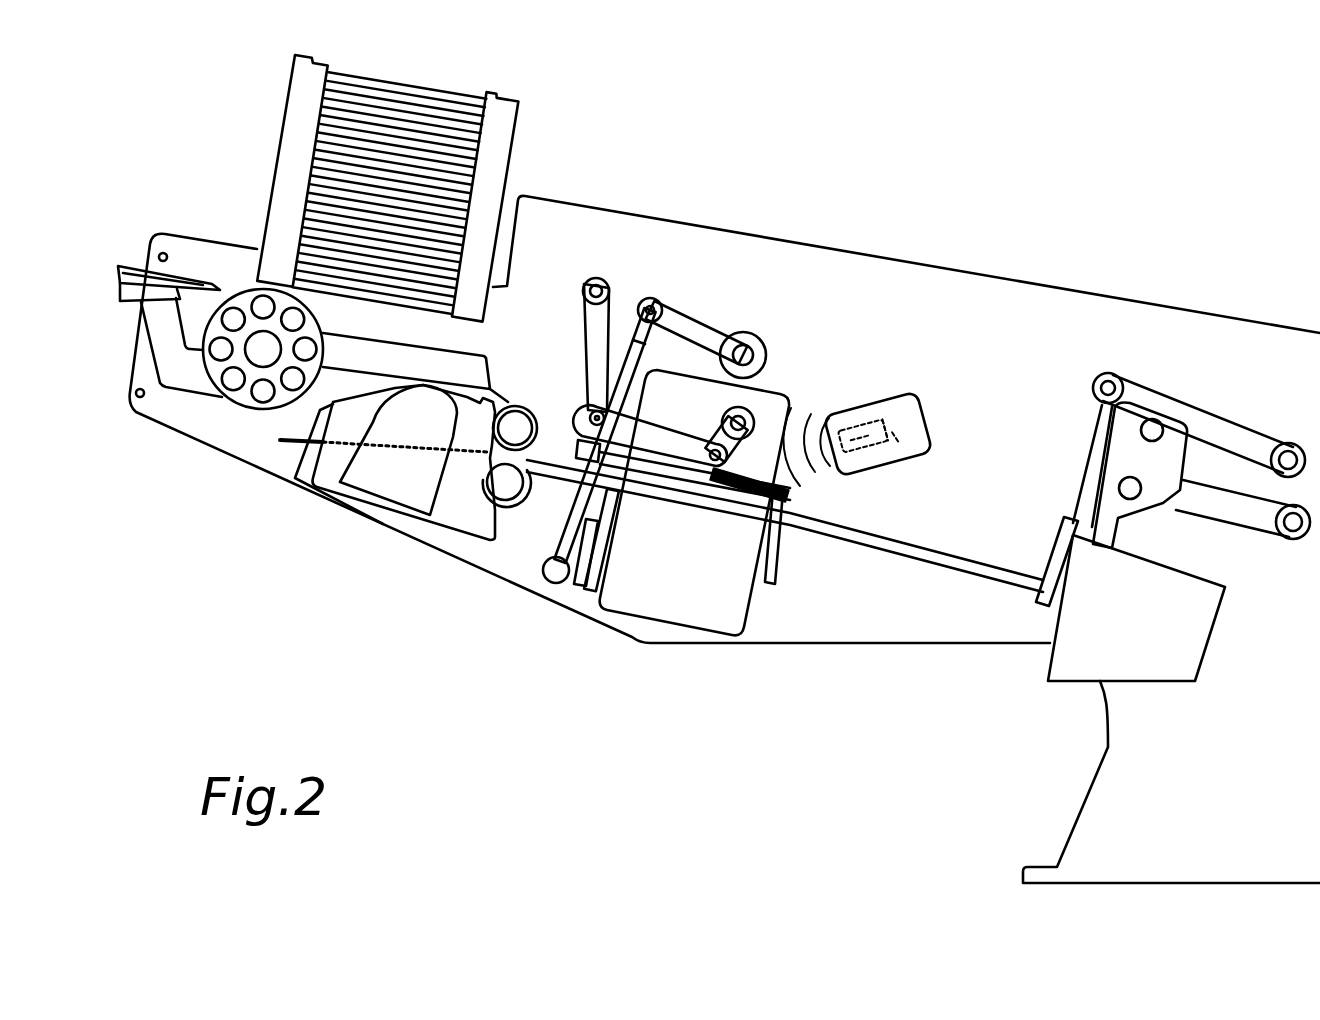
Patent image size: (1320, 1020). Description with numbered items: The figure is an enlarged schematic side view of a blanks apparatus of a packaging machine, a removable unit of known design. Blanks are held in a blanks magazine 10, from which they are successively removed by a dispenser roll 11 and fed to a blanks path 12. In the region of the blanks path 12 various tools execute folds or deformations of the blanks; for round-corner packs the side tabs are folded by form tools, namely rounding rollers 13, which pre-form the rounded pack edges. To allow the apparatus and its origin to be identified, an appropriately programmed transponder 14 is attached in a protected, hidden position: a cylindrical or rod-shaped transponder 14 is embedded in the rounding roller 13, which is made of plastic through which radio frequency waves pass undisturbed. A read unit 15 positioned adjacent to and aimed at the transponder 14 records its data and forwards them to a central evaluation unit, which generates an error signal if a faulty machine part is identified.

The blanks magazine 10 is at (545, 100).
The dispenser roll 11 is at (257, 358).
The blanks path 12 is at (899, 574).
The rounding roller 13 is at (762, 470).
The transponder 14 is at (735, 497).
The read unit 15 is at (918, 423).